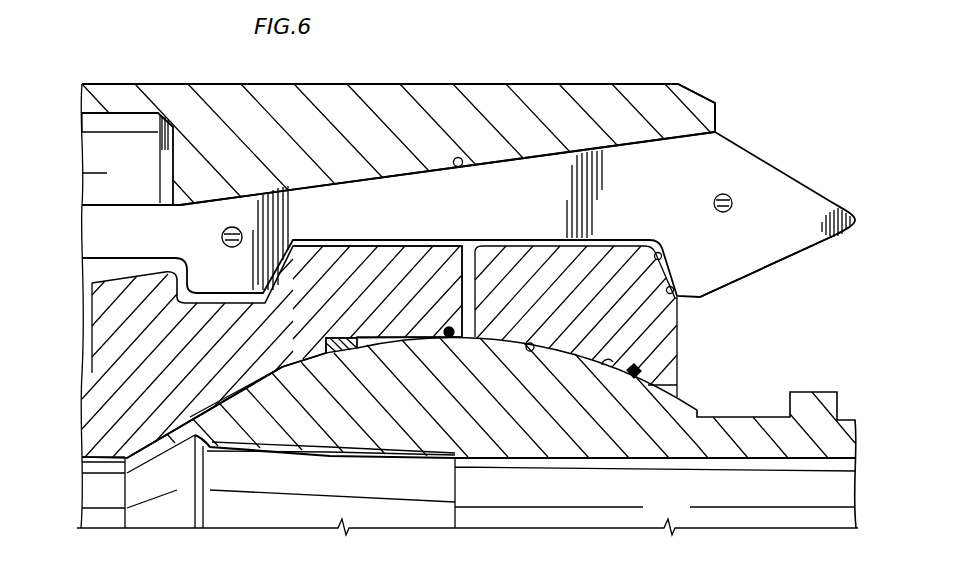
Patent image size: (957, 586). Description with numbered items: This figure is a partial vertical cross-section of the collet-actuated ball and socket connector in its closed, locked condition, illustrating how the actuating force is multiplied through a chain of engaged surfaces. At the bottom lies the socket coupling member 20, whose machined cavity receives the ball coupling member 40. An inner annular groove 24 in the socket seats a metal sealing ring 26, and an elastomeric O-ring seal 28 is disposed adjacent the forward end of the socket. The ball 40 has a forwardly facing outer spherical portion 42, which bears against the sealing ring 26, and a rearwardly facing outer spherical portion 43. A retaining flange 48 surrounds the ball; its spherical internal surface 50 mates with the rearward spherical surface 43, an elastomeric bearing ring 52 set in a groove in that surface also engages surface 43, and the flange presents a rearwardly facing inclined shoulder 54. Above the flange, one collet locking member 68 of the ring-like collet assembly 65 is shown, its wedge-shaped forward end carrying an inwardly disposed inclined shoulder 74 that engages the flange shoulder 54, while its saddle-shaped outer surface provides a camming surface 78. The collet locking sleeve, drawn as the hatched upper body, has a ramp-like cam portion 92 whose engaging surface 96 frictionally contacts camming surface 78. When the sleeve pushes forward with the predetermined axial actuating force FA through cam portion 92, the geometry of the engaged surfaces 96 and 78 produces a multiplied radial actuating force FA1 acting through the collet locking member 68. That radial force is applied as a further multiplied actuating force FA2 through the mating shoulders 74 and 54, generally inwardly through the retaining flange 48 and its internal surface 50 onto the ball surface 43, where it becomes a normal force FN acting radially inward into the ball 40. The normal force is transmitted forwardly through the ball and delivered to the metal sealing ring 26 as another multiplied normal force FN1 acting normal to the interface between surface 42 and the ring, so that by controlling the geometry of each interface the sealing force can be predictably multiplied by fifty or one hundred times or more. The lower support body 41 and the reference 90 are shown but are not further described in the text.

The socket coupling member 20 is at (170, 357).
The inner annular groove 24 is at (372, 337).
The metal sealing ring 26 is at (336, 336).
The O-ring seal 28 is at (446, 327).
The ball coupling member 40 is at (673, 446).
The support portion 41 is at (191, 439).
The forwardly facing outer spherical portion 42 is at (240, 396).
The rearwardly facing outer spherical portion 43 is at (613, 368).
The retaining flange 48 is at (498, 318).
The spherical internal surface 50 is at (531, 342).
The elastomeric bearing ring 52 is at (641, 367).
The rearwardly facing inclined shoulder 54 is at (656, 257).
The collet assembly 65 is at (720, 99).
The collet locking member 68 is at (748, 162).
The inwardly disposed inclined shoulder 74 is at (668, 286).
The camming surface 78 is at (460, 168).
The upper clamping jaw 90 is at (457, 82).
The cam portion 92 is at (543, 100).
The engaging surface 96 is at (348, 182).
The actuating force FA is at (418, 118).
The radial actuating force FA1 is at (652, 125).
The multiplied actuating force FA2 is at (678, 265).
The normal force FN is at (573, 355).
The multiplied normal force FN1 is at (343, 357).